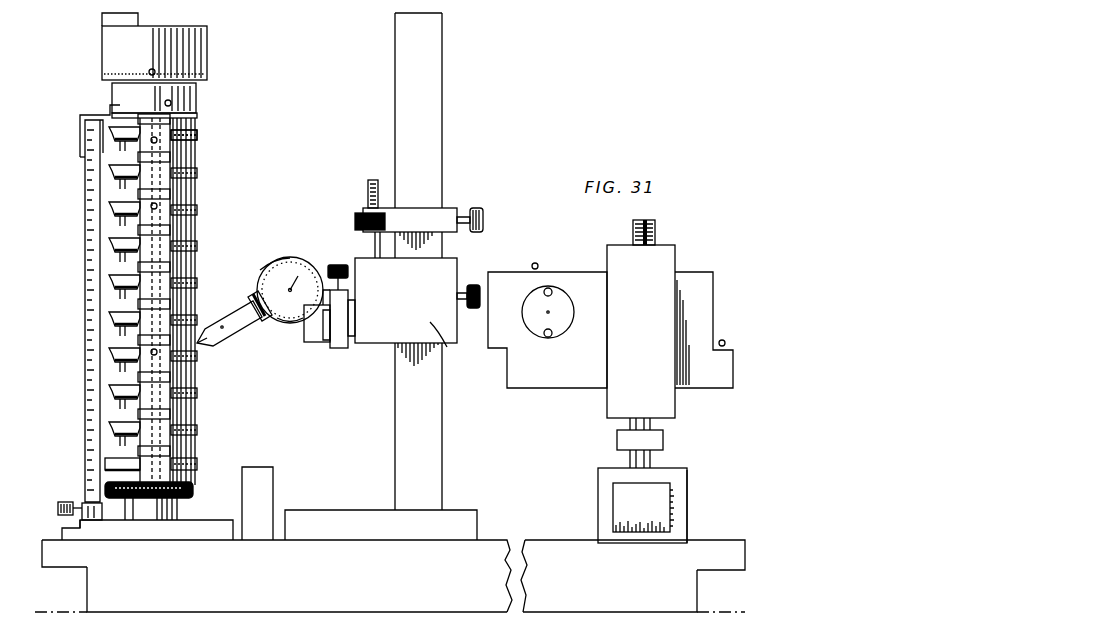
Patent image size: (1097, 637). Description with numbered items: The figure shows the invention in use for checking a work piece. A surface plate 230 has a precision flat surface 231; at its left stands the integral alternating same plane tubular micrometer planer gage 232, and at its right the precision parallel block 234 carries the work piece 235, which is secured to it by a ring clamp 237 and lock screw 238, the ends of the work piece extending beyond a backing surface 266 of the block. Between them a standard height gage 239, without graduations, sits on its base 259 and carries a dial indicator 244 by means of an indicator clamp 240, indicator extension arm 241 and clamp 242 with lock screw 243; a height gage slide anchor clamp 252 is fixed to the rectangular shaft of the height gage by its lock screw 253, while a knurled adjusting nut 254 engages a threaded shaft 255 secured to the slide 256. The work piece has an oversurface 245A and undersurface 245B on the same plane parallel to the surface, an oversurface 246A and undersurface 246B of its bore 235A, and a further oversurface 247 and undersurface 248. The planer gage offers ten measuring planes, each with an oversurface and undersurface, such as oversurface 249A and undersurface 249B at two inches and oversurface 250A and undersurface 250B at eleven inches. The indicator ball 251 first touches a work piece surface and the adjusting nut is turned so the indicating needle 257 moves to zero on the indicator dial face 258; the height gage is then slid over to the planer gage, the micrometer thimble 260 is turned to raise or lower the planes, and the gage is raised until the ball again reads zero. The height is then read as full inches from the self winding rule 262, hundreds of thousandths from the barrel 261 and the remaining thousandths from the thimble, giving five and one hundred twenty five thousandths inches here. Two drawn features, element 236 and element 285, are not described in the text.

The surface plate 230 is at (698, 593).
The precision flat surface 231 is at (731, 549).
The alternating same plane tubular micrometer planer gage 232 is at (197, 510).
The precision parallel block 234 is at (690, 496).
The work piece 235 is at (700, 312).
The bore 235A is at (565, 327).
The coupling block 236 is at (660, 458).
The ring clamp 237 is at (665, 271).
The lock screw 238 is at (658, 231).
The standard height gage 239 is at (448, 446).
The indicator clamp 240 is at (254, 292).
The indicator extension arm 241 is at (314, 336).
The clamp 242 is at (338, 350).
The lock screw 243 is at (342, 270).
The dial indicator 244 is at (289, 336).
The oversurface 245A is at (728, 343).
The undersurface 245B is at (494, 355).
The oversurface of the bore 246A is at (553, 293).
The undersurface of the bore 246B is at (548, 338).
The oversurface 247 is at (537, 263).
The undersurface 248 is at (548, 389).
The oversurface 249A is at (199, 453).
The undersurface 249B is at (118, 453).
The oversurface 250A is at (200, 121).
The undersurface 250B is at (199, 146).
The indicator ball 251 is at (199, 340).
The height gage slide anchor clamp 252 is at (323, 345).
The lock screw 253 is at (472, 292).
The knurled adjusting nut 254 is at (384, 235).
The threaded shaft 255 is at (368, 186).
The slide 256 is at (447, 347).
The indicating needle 257 is at (298, 275).
The indicator dial face 258 is at (280, 262).
The base 259 is at (473, 512).
The micrometer thimble 260 is at (208, 65).
The barrel 261 is at (199, 106).
The self winding scale or rule 262 is at (90, 306).
The backing surface 266 is at (613, 524).
The slide plate 285 is at (690, 520).